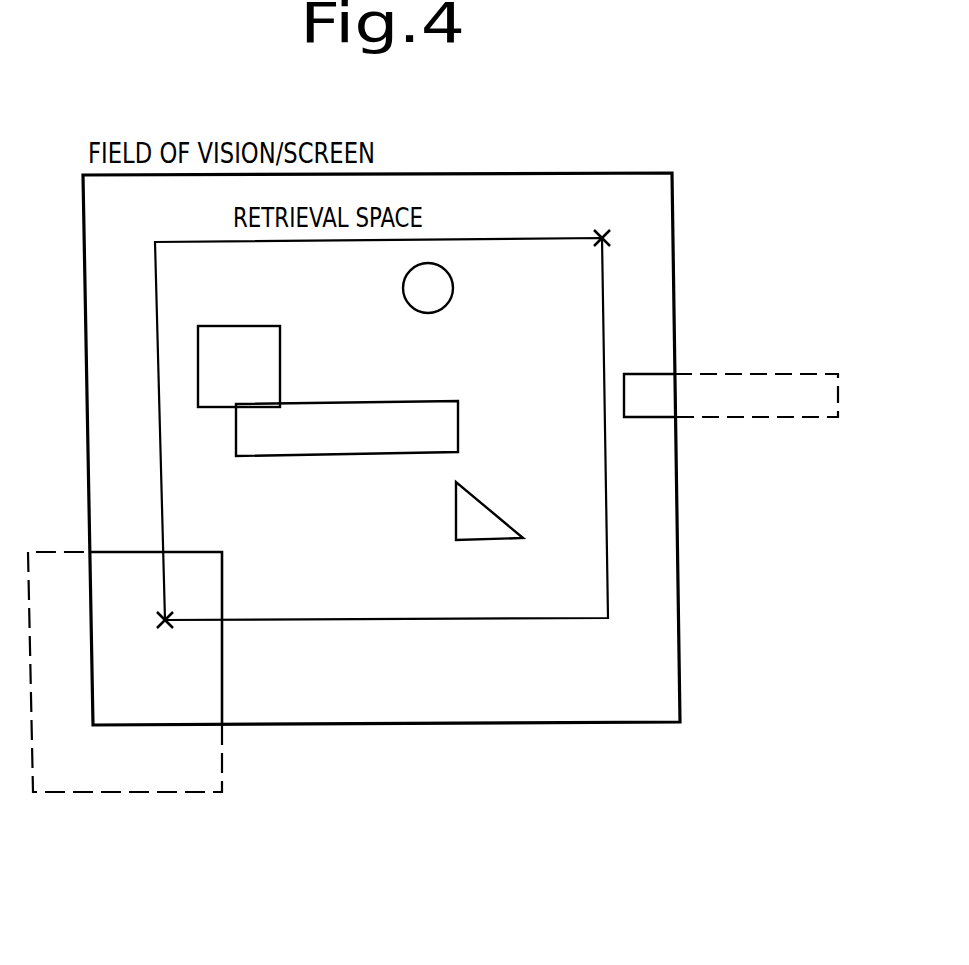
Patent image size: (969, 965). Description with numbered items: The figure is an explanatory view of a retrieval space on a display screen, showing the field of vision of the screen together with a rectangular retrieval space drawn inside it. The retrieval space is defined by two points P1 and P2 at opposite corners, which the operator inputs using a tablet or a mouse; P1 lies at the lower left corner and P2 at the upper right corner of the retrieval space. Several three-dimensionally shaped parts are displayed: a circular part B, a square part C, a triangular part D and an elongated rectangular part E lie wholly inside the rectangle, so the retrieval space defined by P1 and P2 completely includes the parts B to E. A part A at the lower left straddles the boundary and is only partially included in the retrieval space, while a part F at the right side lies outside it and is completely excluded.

The three-dimensionally shaped part A is at (222, 745).
The three-dimensionally shaped part B is at (452, 290).
The three-dimensionally shaped part C is at (280, 370).
The three-dimensionally shaped part D is at (484, 500).
The three-dimensionally shaped part E is at (458, 428).
The three-dimensionally shaped part F is at (772, 374).
The point defining the side of the retrieval space P1 is at (166, 640).
The point defining the side of the retrieval space P2 is at (623, 239).